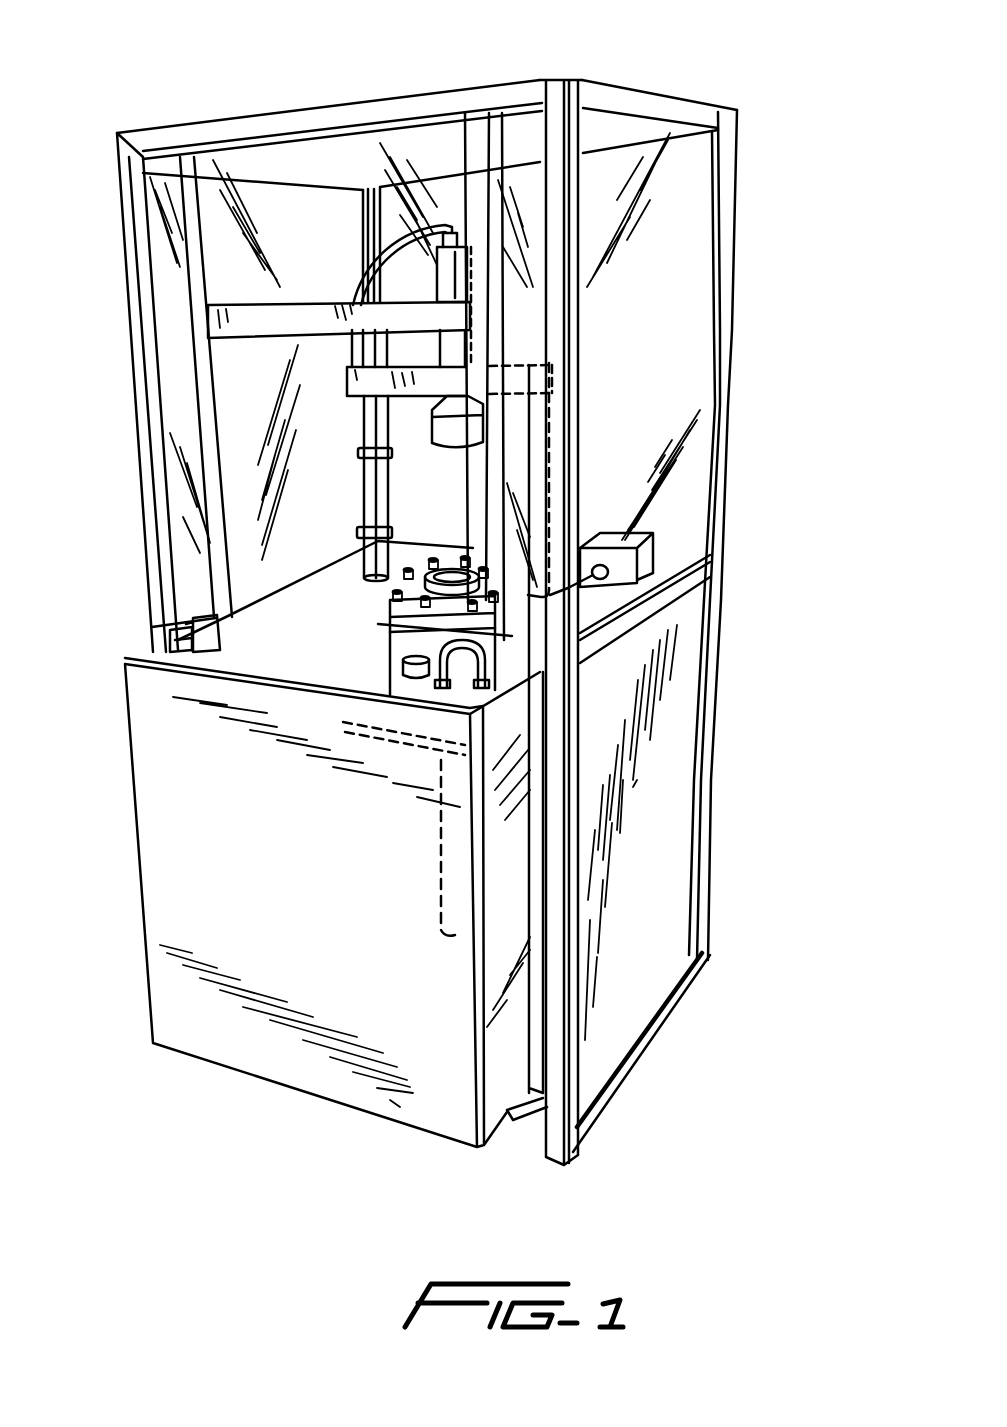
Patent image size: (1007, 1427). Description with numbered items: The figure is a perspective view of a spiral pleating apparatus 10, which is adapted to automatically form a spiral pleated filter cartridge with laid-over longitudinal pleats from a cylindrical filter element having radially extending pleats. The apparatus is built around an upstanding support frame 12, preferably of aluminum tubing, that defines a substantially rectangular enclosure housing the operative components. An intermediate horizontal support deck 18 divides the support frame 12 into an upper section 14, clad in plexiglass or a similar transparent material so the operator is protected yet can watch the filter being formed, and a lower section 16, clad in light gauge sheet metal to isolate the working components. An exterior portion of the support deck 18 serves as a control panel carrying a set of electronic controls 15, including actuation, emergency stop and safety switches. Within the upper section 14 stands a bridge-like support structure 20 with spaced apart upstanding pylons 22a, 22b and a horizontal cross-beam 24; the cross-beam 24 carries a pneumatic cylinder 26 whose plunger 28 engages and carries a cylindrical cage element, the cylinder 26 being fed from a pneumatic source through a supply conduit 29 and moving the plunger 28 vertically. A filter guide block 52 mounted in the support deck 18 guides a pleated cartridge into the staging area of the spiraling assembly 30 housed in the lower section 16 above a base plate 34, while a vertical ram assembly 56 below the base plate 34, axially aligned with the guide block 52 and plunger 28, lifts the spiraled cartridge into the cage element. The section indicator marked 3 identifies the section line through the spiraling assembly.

The spiral pleating apparatus 10 is at (770, 175).
The support frame 12 is at (556, 105).
The upper section 14 is at (660, 373).
The electronic controls 15 is at (172, 625).
The lower section 16 is at (683, 758).
The horizontal support deck 18 is at (328, 603).
The support structure 20 is at (347, 398).
The pylon 22a is at (447, 433).
The pylon 22b is at (537, 484).
The horizontal cross-beam 24 is at (527, 373).
The pneumatic cylinder 26 is at (405, 203).
The plunger 28 is at (367, 488).
The supply conduit 29 is at (358, 278).
The spiraling assembly 30 is at (390, 755).
The base plate 34 is at (356, 722).
The filter guide block 52 is at (385, 619).
The vertical ram assembly 56 is at (447, 937).
The section line 3- 3 is at (363, 682).